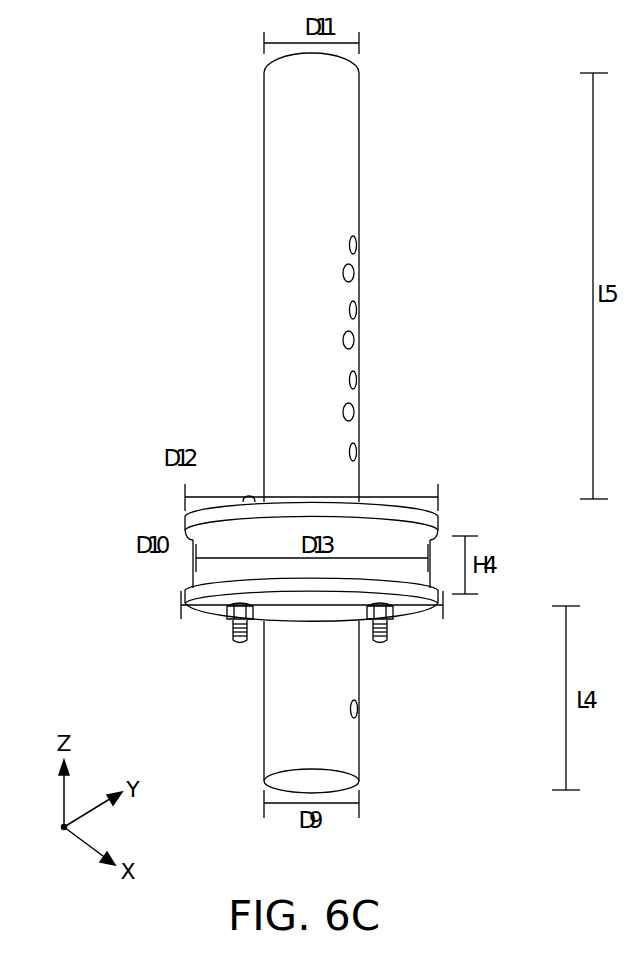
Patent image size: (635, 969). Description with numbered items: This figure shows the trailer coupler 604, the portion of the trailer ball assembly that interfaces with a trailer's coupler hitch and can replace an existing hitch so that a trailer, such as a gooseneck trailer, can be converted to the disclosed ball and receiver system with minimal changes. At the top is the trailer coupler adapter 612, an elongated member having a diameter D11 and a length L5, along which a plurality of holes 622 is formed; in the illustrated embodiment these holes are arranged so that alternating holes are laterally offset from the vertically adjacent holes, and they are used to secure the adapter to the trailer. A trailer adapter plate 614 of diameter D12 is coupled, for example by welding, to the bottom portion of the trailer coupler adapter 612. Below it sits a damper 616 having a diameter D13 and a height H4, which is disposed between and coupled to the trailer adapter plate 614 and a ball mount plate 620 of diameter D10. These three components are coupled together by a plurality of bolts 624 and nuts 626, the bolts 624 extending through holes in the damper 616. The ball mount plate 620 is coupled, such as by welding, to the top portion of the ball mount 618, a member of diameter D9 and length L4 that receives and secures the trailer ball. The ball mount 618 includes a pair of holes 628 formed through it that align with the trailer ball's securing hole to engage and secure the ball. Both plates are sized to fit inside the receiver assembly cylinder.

The trailer coupler 604 is at (455, 94).
The trailer coupler adapter 612 is at (337, 213).
The trailer adapter plate 614 is at (387, 508).
The damper 616 is at (408, 550).
The ball mount 618 is at (352, 690).
The ball mount plate 620 is at (410, 607).
The plurality of holes 622 is at (362, 308).
The bolts 624 is at (248, 498).
The nuts 626 is at (228, 618).
The pair of holes 628 is at (360, 710).